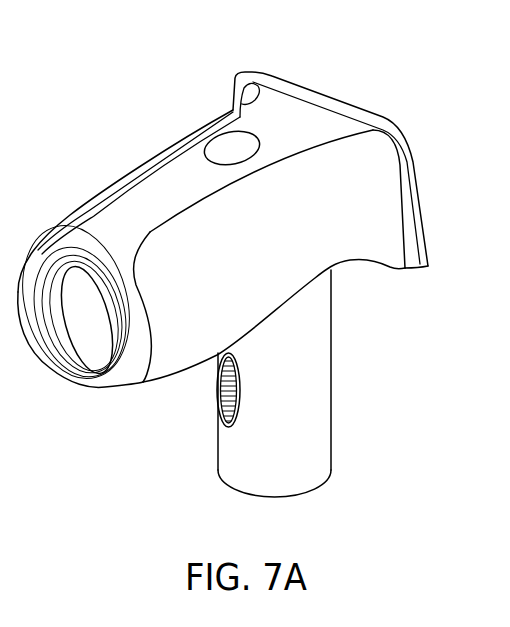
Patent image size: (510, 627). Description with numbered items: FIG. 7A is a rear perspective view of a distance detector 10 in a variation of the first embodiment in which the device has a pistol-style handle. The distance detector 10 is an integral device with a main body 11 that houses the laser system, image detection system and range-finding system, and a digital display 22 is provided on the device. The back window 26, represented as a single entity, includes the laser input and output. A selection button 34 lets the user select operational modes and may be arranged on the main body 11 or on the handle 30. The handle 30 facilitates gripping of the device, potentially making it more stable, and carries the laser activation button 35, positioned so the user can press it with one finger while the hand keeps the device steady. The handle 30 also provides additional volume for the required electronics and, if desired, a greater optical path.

The distance detector 10 is at (118, 50).
The main body 11 is at (253, 269).
The digital display 22 is at (386, 104).
The back window 26 is at (83, 317).
The handle 30 is at (313, 368).
The selection button 34 is at (217, 143).
The laser activation button 35 is at (217, 402).